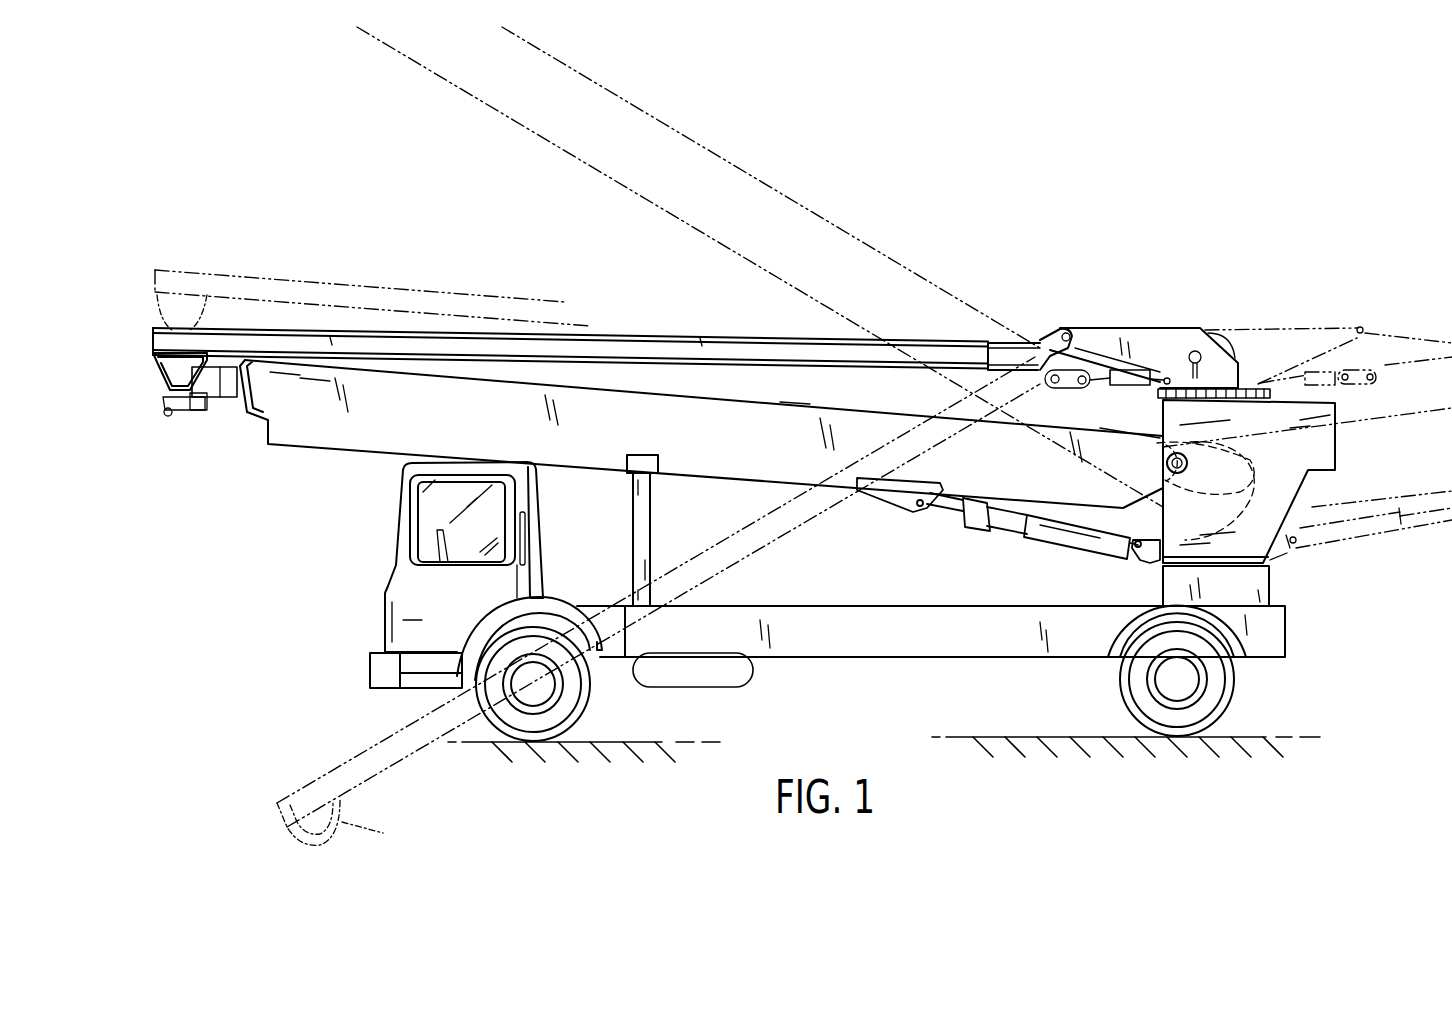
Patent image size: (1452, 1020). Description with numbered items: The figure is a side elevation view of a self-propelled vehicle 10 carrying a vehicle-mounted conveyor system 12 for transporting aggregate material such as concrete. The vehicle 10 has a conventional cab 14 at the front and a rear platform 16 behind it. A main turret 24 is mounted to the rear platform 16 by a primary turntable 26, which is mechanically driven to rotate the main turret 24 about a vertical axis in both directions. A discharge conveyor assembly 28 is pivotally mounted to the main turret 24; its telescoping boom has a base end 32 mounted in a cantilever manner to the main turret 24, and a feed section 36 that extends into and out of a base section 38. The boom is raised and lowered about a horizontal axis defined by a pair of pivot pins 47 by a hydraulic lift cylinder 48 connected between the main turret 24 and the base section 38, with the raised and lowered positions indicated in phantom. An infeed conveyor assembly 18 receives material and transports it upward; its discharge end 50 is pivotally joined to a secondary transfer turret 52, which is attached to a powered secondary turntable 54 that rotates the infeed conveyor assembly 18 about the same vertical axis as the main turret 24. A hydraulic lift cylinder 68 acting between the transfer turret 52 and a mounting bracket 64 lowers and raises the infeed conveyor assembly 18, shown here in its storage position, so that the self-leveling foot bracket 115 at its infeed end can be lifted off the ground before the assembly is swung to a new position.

The self-propelled vehicle 10 is at (372, 556).
The vehicle-mounted conveyor system 12 is at (1021, 292).
The cab 14 is at (422, 620).
The rear platform 16 is at (905, 625).
The infeed conveyor assembly 18 is at (598, 338).
The main turret 24 is at (1318, 447).
The primary turntable 26 is at (1263, 583).
The discharge conveyor assembly 28 is at (701, 476).
The base end 32 is at (1140, 445).
The feed section 36 is at (228, 390).
The base section 38 is at (298, 437).
The pivot pins 47 is at (1167, 463).
The hydraulic lift cylinder 48 is at (1058, 533).
The discharge end 50 is at (1008, 344).
The secondary transfer turret 52 is at (1137, 333).
The secondary turntable 54 is at (1248, 388).
The mounting bracket 64 is at (1047, 340).
The hydraulic lift cylinder 68 is at (1137, 378).
The self-leveling foot bracket 115 is at (162, 372).